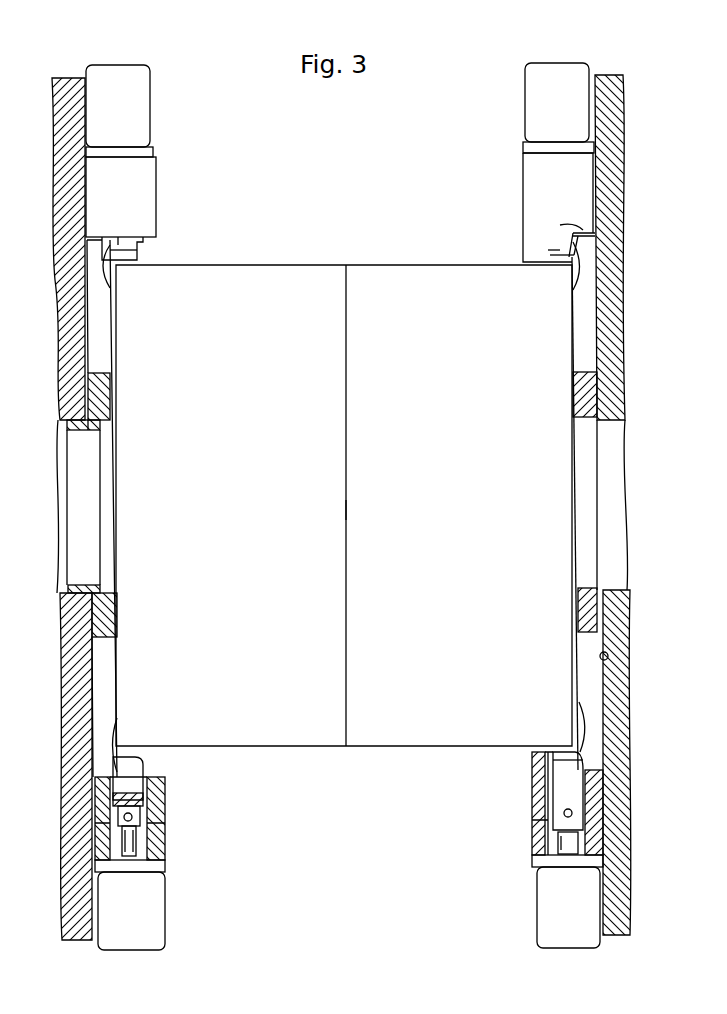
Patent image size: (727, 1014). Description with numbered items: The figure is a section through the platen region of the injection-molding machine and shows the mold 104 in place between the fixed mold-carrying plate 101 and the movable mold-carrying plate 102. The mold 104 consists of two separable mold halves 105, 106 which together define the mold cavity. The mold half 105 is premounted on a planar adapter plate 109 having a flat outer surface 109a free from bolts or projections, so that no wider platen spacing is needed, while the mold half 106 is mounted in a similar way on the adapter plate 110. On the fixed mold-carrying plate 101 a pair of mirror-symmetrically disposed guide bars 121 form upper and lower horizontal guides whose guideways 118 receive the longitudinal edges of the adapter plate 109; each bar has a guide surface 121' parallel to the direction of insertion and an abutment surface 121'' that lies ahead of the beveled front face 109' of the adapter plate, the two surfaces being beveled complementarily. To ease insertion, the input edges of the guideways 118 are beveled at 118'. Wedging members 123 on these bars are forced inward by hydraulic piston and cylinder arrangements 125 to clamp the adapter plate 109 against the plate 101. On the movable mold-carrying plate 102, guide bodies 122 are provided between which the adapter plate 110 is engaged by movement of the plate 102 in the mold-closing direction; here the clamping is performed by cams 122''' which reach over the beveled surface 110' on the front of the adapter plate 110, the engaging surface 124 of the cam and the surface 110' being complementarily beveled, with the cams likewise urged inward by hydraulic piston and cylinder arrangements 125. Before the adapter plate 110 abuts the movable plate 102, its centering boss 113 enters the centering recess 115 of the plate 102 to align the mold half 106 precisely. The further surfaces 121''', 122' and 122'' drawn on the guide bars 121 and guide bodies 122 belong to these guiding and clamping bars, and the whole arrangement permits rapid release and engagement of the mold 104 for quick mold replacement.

The fixed mold-carrying plate 101 is at (608, 353).
The movable mold-carrying plate 102 is at (70, 367).
The mold 104 is at (325, 748).
The mold half 105 is at (422, 715).
The mold half 106 is at (248, 715).
The adapter plate 109 is at (558, 513).
The front face of the adapter plate 109' is at (560, 497).
The flat outer surface 109a is at (603, 657).
The adapter plate 110 is at (129, 508).
The beveled surface 110' is at (139, 508).
The centering boss 113 is at (80, 587).
The centering recess 115 is at (70, 590).
The guideways 118 is at (530, 234).
The beveled input edges 118' is at (576, 201).
The guide bars 121 is at (541, 504).
The guide surface 121' is at (530, 210).
The abutment surface 121'' is at (543, 273).
The abutment of right housing 121''' is at (504, 252).
The guide bodies 122 is at (150, 509).
The latch of left housing 122' is at (158, 238).
The ledge of left housing 122'' is at (166, 244).
The cams 122''' is at (168, 496).
The wedging members 123 is at (558, 768).
The engaging surface 124 is at (137, 768).
The hydraulic piston and cylinder arrangements 125 is at (132, 120).